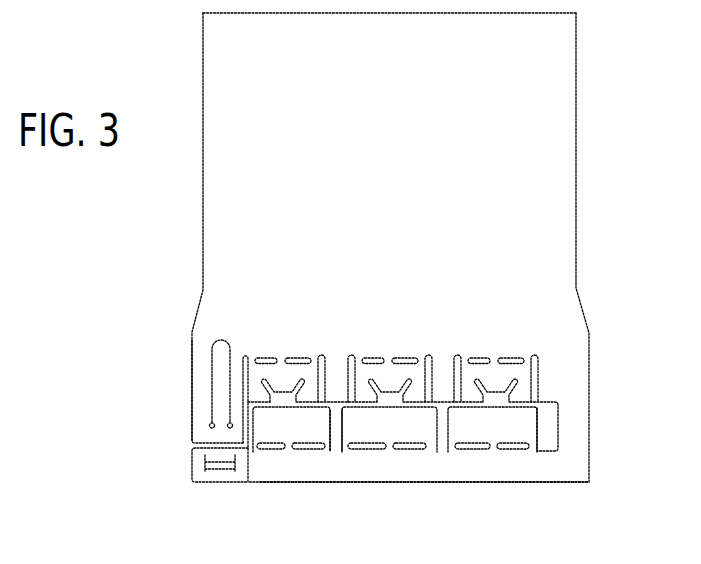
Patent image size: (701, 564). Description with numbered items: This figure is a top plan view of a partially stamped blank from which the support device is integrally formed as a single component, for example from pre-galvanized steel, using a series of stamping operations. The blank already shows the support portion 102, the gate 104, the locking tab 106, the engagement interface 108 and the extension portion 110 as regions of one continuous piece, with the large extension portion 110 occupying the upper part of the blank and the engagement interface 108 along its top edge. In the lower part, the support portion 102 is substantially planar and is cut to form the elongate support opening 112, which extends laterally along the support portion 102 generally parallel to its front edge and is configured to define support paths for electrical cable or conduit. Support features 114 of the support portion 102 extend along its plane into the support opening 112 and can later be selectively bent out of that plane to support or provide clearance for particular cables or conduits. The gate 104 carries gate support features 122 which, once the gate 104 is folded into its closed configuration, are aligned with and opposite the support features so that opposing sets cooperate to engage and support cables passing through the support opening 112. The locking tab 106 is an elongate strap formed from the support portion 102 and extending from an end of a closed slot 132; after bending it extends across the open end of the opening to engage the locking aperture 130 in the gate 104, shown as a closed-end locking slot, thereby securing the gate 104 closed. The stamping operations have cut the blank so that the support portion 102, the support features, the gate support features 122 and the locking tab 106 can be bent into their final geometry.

The support portion 102 is at (568, 385).
The gate 104 is at (503, 473).
The locking tab 106 is at (218, 417).
The engagement interface 108 is at (576, 41).
The extension portion 110 is at (553, 202).
The support opening 112 is at (336, 443).
The support features 114 is at (283, 373).
The gate support features 122 is at (273, 428).
The locking aperture 130 is at (220, 470).
The closed slot 132 is at (212, 367).